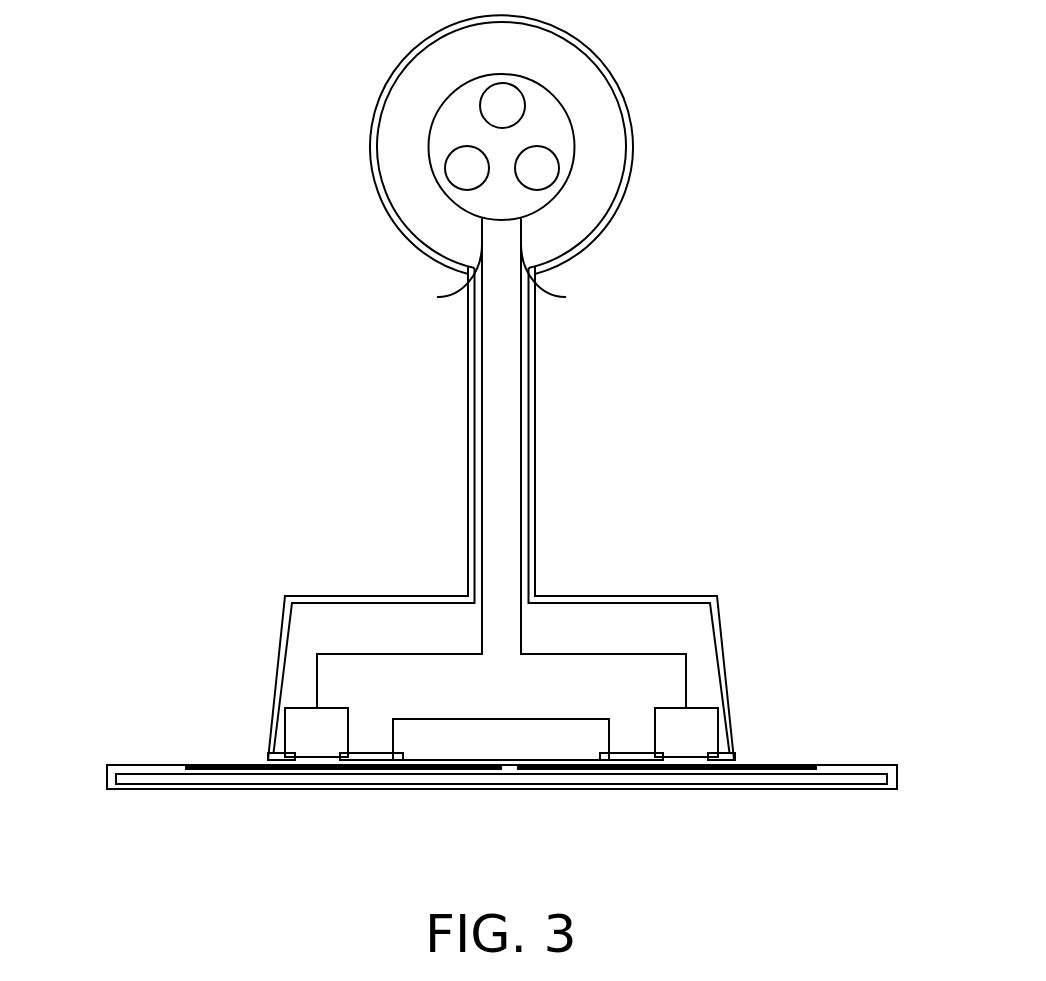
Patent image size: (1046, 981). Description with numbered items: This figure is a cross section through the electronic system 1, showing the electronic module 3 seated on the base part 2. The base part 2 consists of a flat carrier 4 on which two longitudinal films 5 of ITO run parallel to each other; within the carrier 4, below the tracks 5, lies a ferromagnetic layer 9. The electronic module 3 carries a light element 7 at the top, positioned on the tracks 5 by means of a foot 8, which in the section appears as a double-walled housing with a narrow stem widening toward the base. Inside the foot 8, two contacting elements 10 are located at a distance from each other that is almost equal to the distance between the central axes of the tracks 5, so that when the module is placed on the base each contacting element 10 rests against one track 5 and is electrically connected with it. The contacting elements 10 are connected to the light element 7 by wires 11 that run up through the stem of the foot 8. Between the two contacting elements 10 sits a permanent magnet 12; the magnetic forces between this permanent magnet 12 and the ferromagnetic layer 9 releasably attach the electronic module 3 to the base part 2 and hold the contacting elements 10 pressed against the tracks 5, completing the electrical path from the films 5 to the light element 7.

The electronic system 1 is at (774, 297).
The base part 2 is at (118, 744).
The electronic module 3 is at (358, 200).
The carrier 4 is at (851, 765).
The films 5 is at (223, 765).
The light element 7 is at (502, 120).
The foot 8 is at (643, 596).
The ferromagnetic layer 9 is at (166, 782).
The contacting elements 10 is at (302, 723).
The wires 11 is at (502, 277).
The permanent magnet 12 is at (503, 731).